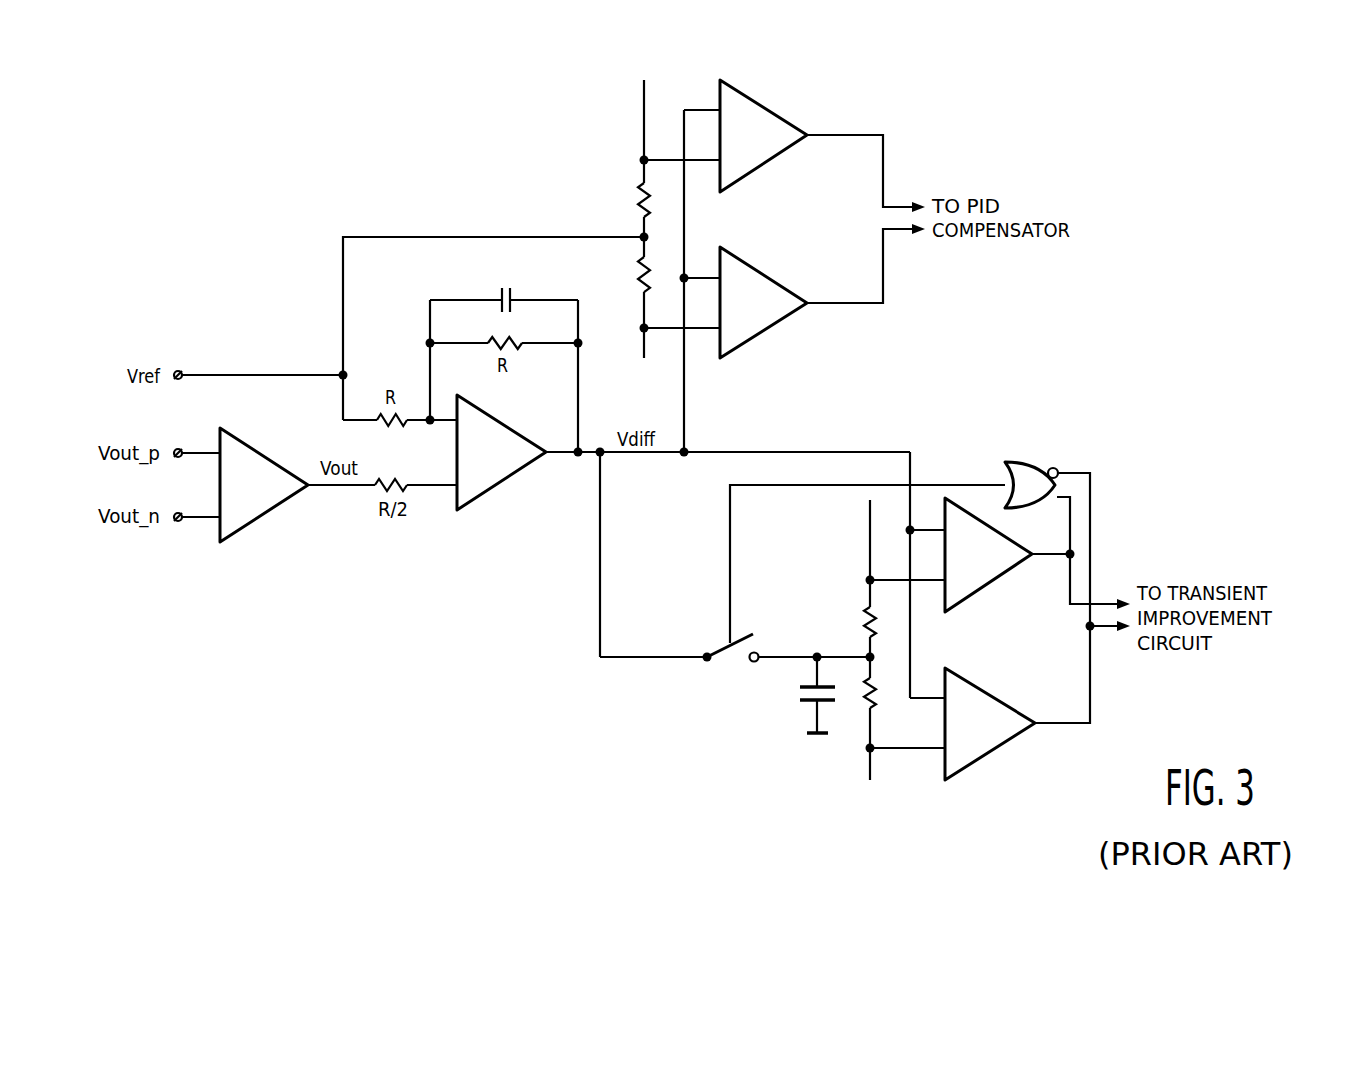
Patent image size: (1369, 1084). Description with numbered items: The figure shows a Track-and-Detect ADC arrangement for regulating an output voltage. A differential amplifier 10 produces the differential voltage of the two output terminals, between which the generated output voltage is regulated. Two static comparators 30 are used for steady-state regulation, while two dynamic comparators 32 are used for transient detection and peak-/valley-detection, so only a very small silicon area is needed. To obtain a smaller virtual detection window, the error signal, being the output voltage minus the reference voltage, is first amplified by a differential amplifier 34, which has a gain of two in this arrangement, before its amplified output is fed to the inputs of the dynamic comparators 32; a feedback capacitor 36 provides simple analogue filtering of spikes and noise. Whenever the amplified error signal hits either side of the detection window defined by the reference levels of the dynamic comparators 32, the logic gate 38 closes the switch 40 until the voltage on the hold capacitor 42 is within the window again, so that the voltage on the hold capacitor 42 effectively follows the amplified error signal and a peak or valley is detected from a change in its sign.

The differential amplifier 10 is at (258, 520).
The static comparators 30 is at (766, 165).
The dynamic comparators 32 is at (992, 585).
The differential amplifier 34 is at (493, 487).
The feedback capacitor 36 is at (514, 287).
The logic gate 38 is at (1031, 462).
The switch 40 is at (730, 660).
The hold capacitor 42 is at (805, 703).